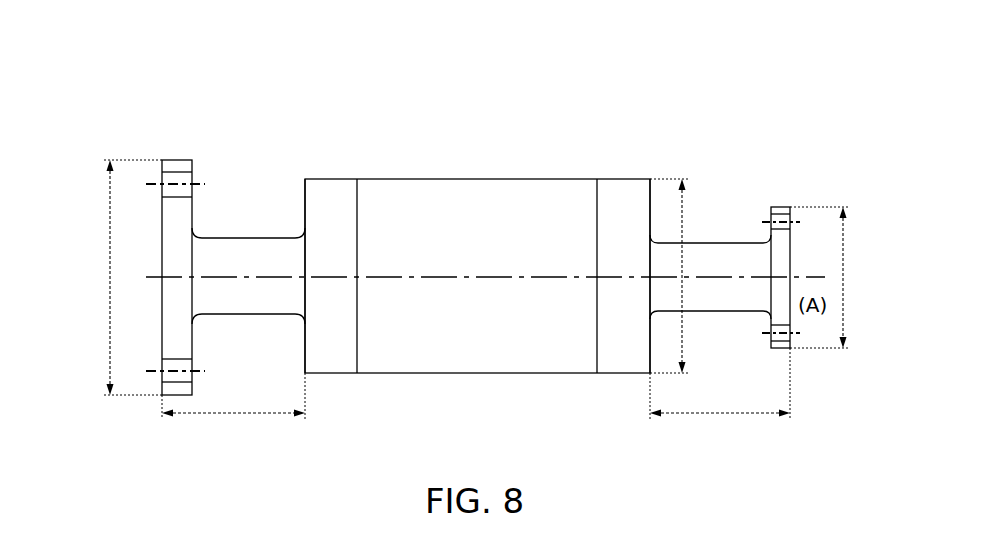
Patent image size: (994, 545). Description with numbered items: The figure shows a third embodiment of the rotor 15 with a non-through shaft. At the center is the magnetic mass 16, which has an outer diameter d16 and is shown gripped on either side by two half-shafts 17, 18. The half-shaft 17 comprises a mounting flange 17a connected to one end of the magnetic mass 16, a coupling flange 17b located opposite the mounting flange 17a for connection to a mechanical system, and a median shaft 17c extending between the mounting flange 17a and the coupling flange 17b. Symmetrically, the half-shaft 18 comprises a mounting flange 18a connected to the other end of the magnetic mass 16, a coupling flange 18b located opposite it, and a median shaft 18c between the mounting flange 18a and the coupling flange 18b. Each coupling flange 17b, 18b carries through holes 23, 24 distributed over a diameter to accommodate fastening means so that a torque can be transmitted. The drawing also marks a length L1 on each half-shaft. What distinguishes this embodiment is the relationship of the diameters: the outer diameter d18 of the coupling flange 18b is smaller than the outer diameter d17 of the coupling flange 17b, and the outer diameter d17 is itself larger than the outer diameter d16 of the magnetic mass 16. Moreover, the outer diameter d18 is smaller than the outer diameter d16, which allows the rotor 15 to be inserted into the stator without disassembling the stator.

The rotor 15 is at (485, 229).
The magnetic mass 16 is at (477, 259).
The half-shaft 17 is at (225, 263).
The half-shaft 18 is at (725, 253).
The through holes 23 is at (175, 172).
The through holes 24 is at (780, 207).
The mounting flange 17a is at (338, 362).
The coupling flange 17b is at (199, 263).
The median shaft 17c is at (259, 303).
The mounting flange 18a is at (619, 362).
The coupling flange 18b is at (768, 285).
The median shaft 18c is at (720, 300).
The outer diameter of the magnetic mass d16 is at (684, 206).
The outer diameter of the coupling flange 17b d17 is at (108, 276).
The outer diameter of the coupling flange 18b d18 is at (846, 292).
The length of shaft portion L1 is at (243, 416).